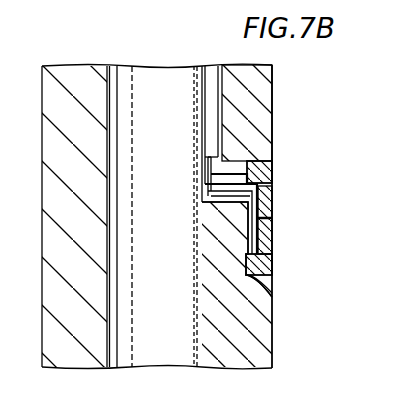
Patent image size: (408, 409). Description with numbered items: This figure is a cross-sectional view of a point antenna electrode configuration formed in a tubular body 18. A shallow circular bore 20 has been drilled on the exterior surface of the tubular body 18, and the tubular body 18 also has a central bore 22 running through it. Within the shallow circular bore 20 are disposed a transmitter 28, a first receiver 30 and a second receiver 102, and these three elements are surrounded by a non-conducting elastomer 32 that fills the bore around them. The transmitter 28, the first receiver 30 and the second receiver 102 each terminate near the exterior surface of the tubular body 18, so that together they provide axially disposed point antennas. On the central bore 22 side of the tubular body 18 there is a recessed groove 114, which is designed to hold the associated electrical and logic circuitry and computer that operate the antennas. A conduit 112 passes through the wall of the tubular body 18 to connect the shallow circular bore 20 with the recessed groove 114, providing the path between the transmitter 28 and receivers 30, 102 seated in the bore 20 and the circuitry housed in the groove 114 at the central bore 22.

The tubular body 18 is at (262, 325).
The shallow circular bore 20 is at (272, 291).
The central bore 22 is at (190, 86).
The transmitter 28 is at (270, 259).
The first receiver 30 is at (270, 230).
The non-conducting elastomer 32 is at (258, 197).
The second receiver 102 is at (250, 172).
The conduit 112 is at (228, 162).
The recessed groove 114 is at (216, 112).